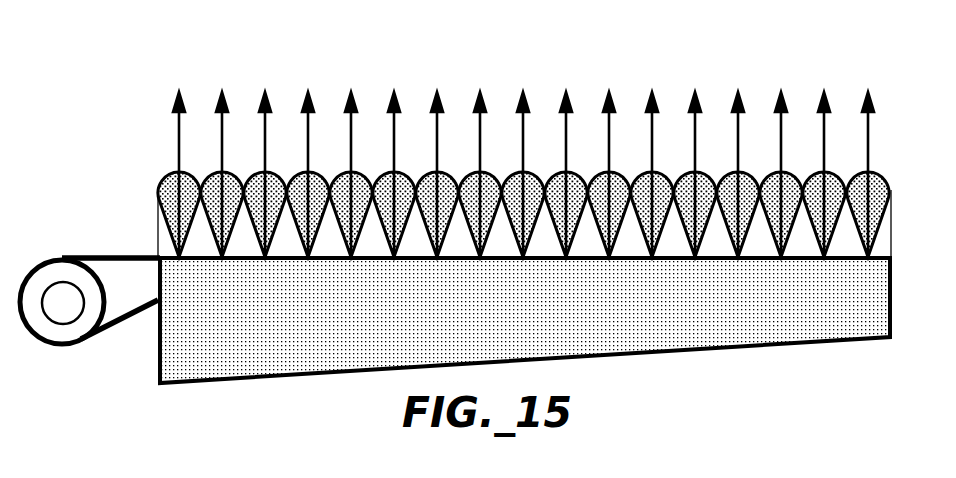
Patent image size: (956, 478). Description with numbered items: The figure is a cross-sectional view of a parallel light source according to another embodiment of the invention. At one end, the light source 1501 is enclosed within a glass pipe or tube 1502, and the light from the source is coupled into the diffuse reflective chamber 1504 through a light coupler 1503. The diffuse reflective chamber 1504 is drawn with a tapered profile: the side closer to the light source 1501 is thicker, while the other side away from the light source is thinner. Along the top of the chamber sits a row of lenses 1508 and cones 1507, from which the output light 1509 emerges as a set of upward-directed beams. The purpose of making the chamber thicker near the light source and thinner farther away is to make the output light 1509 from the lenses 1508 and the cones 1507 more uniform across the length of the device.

The light source 1501 is at (63, 281).
The glass pipe or tube 1502 is at (57, 346).
The light coupler 1503 is at (105, 330).
The diffuse reflective chamber 1504 is at (573, 345).
The cones 1507 is at (888, 264).
The lenses 1508 is at (745, 173).
The output light 1509 is at (372, 66).